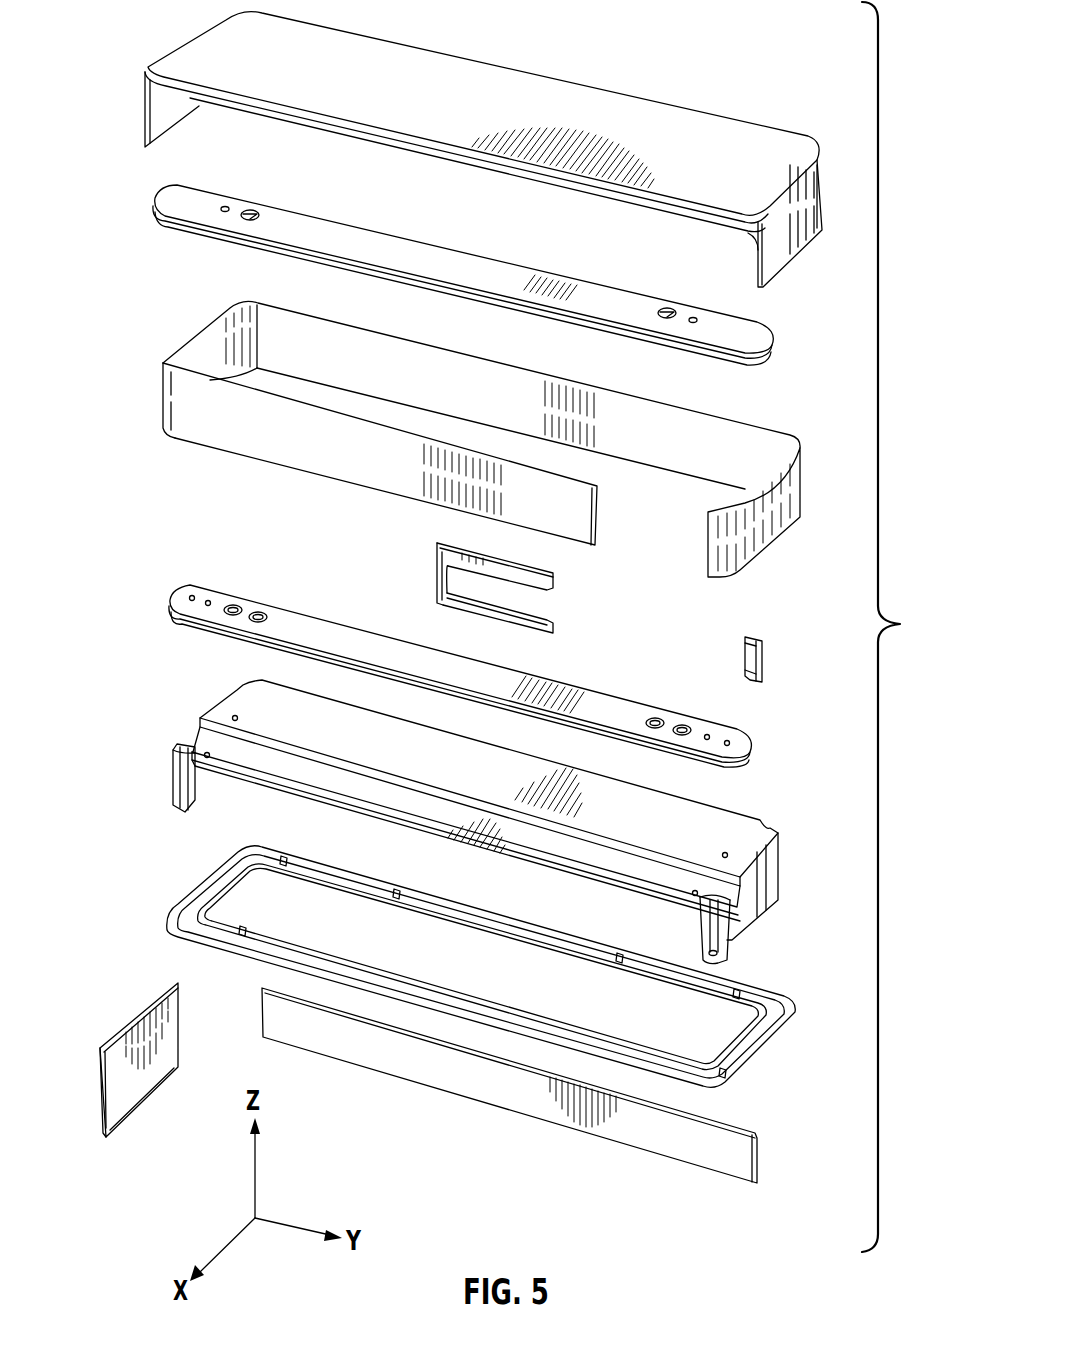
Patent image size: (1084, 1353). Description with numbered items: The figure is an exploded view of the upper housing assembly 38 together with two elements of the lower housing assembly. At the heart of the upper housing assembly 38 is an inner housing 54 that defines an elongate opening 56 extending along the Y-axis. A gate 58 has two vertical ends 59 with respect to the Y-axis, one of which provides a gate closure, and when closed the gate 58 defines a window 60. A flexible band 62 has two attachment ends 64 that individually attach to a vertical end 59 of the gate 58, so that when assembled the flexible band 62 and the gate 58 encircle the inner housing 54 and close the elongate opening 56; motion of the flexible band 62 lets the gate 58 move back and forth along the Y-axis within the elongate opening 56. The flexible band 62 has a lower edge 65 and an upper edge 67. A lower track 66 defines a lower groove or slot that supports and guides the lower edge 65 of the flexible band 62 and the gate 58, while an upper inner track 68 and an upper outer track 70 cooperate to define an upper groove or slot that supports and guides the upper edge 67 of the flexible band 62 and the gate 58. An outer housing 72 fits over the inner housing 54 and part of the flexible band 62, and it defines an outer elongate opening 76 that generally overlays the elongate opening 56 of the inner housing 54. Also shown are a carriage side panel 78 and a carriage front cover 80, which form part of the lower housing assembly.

The upper housing assembly 38 is at (642, 54).
The outer housing 72 is at (760, 162).
The outer elongate opening 76 is at (745, 255).
The upper outer track 70 is at (750, 340).
The upper edge 67 is at (190, 337).
The flexible band 62 is at (208, 428).
The lower edge 65 is at (327, 478).
The attachment ends 64 is at (597, 493).
The gate 58 is at (432, 555).
The vertical ends 59 is at (433, 578).
The window 60 is at (505, 598).
The upper inner track 68 is at (735, 745).
The inner housing 54 is at (730, 830).
The elongate opening 56 is at (681, 922).
The lower track 66 is at (765, 1040).
The carriage side panel 78 is at (738, 1163).
The carriage front cover 80 is at (130, 1050).